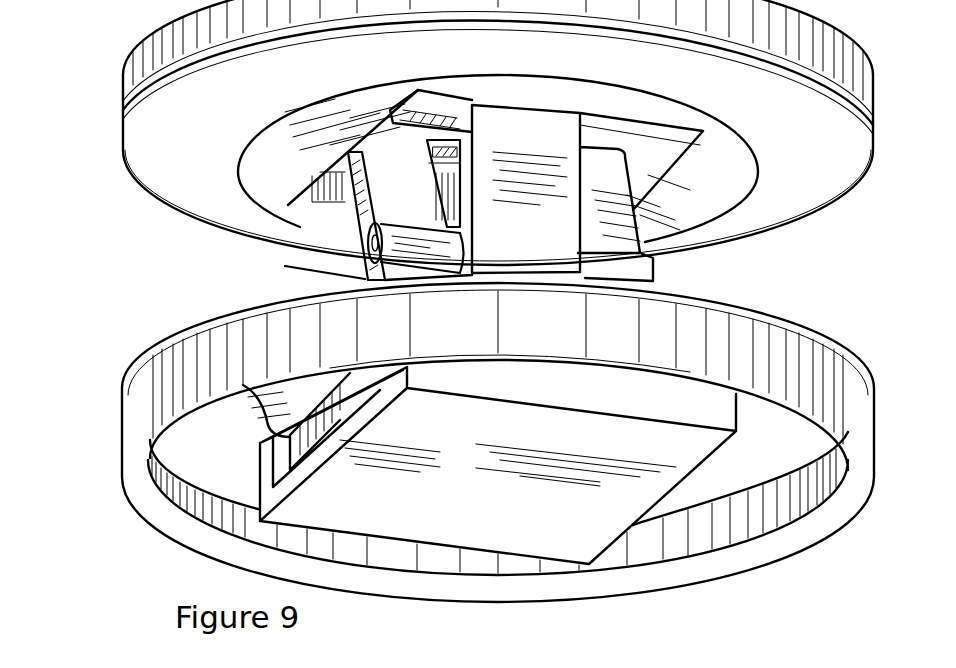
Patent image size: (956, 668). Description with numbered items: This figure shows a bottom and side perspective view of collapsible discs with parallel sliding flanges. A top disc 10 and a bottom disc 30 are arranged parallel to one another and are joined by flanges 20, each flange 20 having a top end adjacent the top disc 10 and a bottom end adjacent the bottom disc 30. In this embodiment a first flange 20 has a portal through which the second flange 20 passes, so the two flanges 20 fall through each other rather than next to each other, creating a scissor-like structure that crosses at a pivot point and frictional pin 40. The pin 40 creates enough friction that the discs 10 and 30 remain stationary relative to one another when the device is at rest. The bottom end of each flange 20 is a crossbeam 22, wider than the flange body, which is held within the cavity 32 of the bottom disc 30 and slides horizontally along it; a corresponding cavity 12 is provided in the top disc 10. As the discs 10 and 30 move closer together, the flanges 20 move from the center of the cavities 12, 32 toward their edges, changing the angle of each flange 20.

The top disc 10 is at (150, 80).
The cavity 12 is at (320, 195).
The flange 20 is at (353, 200).
The crossbeam 22 is at (620, 156).
The bottom disc 30 is at (192, 367).
The cavity 32 is at (353, 400).
The frictional pin 40 is at (372, 244).